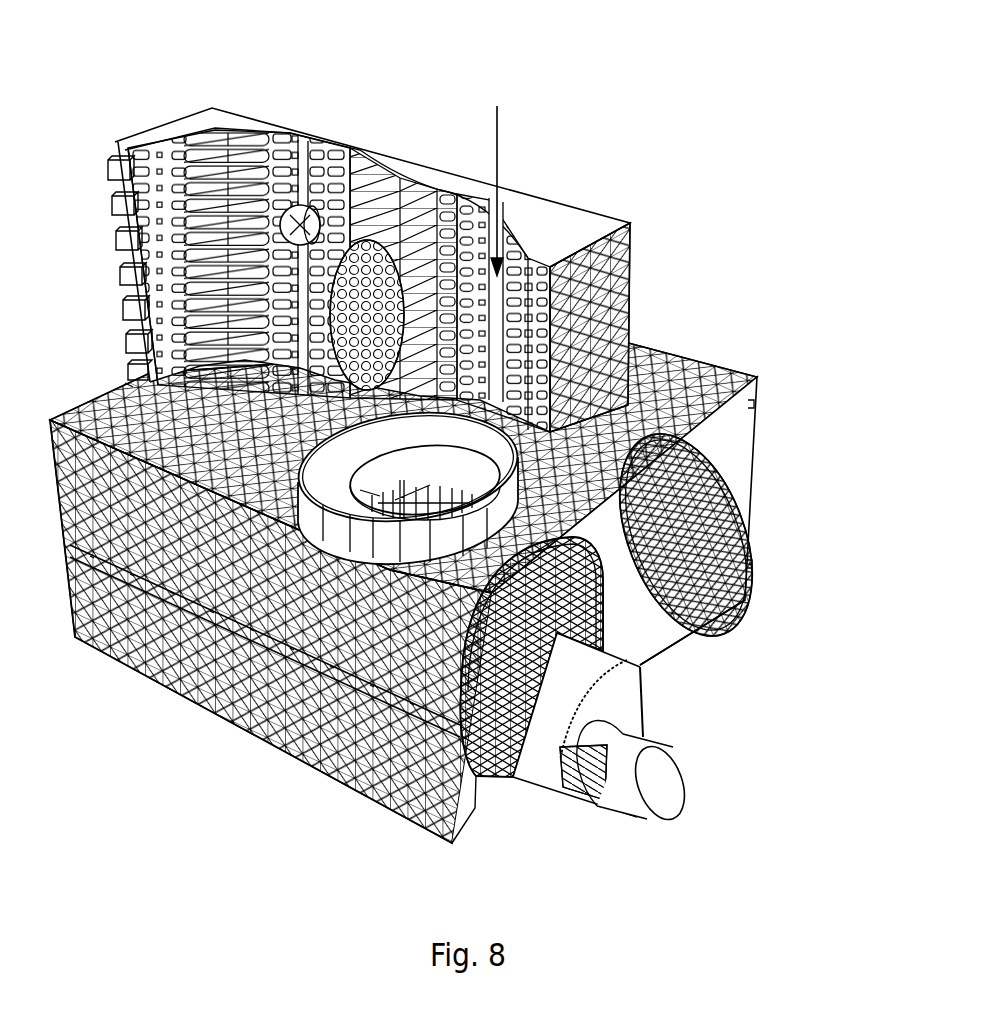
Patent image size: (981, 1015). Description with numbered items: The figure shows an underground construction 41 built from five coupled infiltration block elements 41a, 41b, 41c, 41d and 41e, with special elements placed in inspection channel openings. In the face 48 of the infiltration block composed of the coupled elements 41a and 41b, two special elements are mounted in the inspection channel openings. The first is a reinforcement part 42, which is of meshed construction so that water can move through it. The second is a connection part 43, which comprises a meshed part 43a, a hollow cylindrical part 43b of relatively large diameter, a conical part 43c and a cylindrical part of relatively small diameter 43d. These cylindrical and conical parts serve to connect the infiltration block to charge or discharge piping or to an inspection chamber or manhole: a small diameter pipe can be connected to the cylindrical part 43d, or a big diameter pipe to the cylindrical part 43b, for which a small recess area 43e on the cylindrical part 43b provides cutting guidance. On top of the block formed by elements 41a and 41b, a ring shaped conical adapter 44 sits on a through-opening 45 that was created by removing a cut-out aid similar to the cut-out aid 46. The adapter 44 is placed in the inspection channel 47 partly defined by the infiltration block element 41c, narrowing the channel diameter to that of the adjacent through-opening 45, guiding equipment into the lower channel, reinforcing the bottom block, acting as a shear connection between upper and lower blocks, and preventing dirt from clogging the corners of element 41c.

The underground construction 41 is at (404, 444).
The infiltration block element 41a is at (480, 793).
The infiltration block element 41b is at (624, 596).
The infiltration block element 41c is at (335, 257).
The infiltration block element 41d is at (130, 632).
The infiltration block element 41e is at (96, 413).
The reinforcement part 42 is at (740, 512).
The connection part 43 is at (637, 716).
The meshed part 43a is at (603, 607).
The hollow cylindrical part 43b is at (576, 725).
The conical part 43c is at (617, 702).
The cylindrical part with a relatively small diameter 43d is at (635, 773).
The small recess area 43e is at (591, 681).
The ring shaped conical adapter 44 is at (407, 482).
The through-opening 45 is at (412, 493).
The cut-out aid 46 is at (133, 387).
The inspection channel 47 is at (496, 179).
The face 48 is at (671, 584).